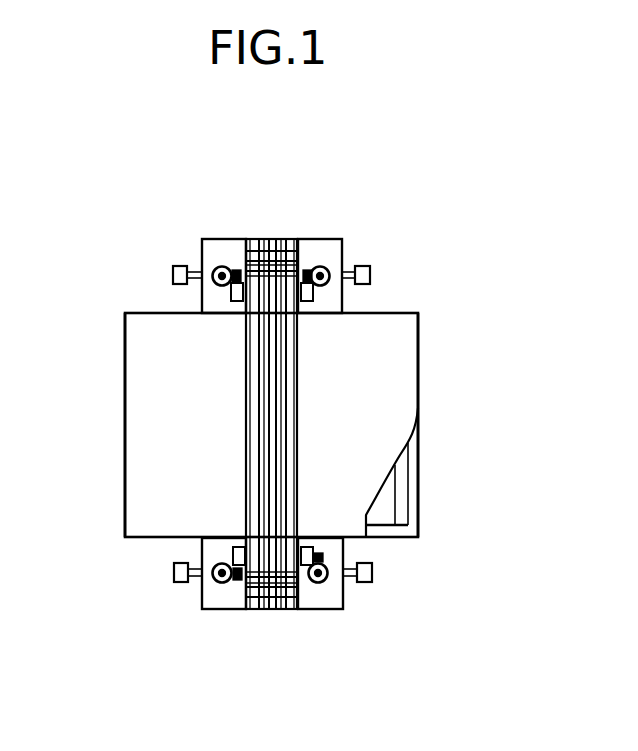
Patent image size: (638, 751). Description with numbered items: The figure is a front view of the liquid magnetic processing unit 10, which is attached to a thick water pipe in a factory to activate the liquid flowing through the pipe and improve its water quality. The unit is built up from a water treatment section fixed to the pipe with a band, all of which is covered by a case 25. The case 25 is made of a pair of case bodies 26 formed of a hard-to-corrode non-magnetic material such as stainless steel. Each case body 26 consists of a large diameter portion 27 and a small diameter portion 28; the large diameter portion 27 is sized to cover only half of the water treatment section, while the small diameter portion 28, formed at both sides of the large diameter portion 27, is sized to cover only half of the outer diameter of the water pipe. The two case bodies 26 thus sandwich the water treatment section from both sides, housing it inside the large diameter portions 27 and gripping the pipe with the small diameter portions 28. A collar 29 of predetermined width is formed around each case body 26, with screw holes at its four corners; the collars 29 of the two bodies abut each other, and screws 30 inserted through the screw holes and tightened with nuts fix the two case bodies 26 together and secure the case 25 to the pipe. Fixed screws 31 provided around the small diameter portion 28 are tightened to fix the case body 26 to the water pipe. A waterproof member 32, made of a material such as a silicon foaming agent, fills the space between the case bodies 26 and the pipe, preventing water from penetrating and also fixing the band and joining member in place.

The liquid magnetic processing unit 10 is at (97, 245).
The case 25 is at (395, 311).
The case body 26 is at (135, 357).
The large diameter portion 27 is at (525, 415).
The small diameter portion 28 is at (345, 548).
The collar 29 is at (245, 460).
The screw 30 is at (233, 300).
The fixed screw 31 is at (182, 266).
The waterproof member 32 is at (385, 498).